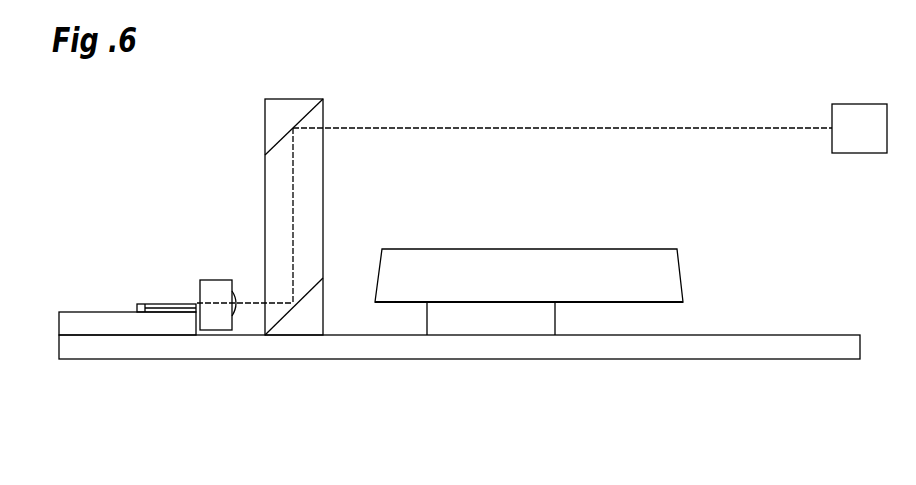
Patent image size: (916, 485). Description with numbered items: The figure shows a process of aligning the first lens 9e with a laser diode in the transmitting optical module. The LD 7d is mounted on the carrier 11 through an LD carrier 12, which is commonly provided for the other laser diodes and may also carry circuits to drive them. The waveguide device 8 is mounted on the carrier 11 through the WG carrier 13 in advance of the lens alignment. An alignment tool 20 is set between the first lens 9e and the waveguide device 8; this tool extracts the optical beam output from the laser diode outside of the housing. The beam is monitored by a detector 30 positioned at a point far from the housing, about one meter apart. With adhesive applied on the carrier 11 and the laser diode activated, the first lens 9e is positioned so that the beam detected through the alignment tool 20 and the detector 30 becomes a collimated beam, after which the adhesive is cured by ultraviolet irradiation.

The carrier 11 is at (730, 350).
The LD carrier 12 is at (78, 310).
The LD 7d is at (148, 305).
The first lens 9e is at (213, 280).
The alignment tool 20 is at (272, 118).
The waveguide device 8 is at (602, 262).
The WG carrier 13 is at (509, 322).
The detector 30 is at (856, 140).